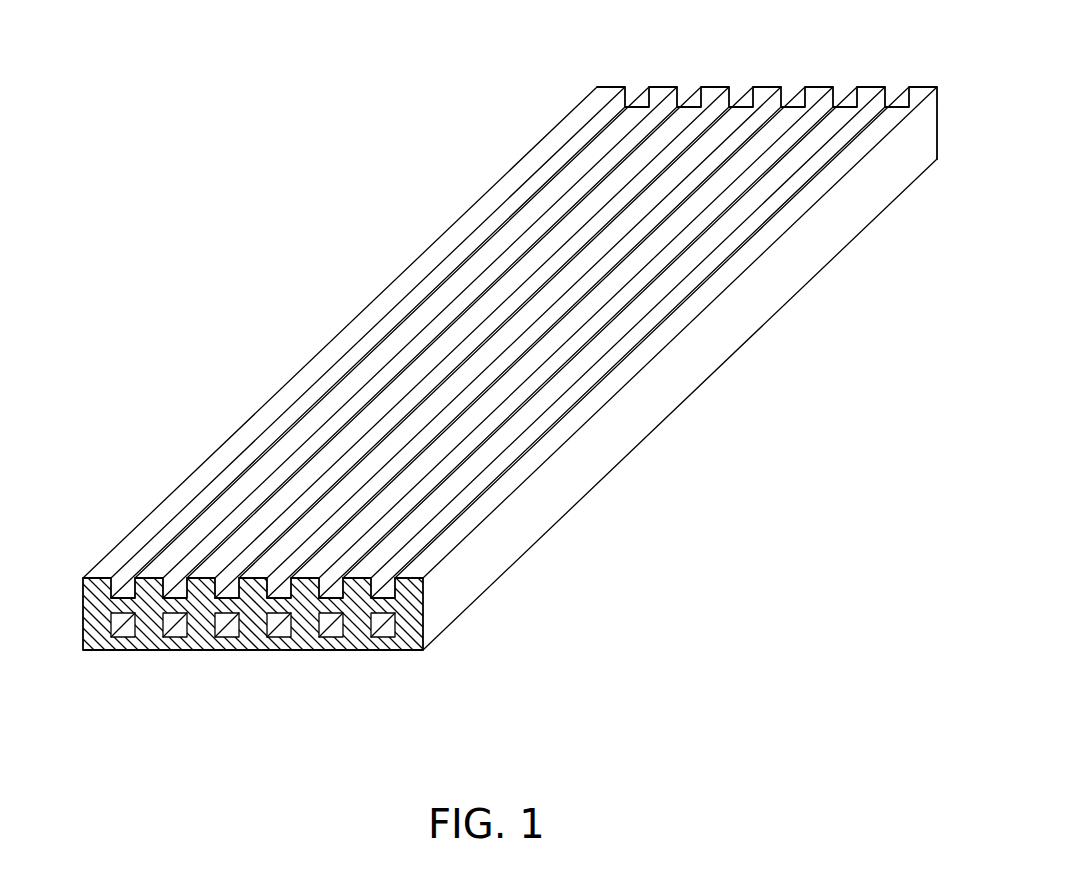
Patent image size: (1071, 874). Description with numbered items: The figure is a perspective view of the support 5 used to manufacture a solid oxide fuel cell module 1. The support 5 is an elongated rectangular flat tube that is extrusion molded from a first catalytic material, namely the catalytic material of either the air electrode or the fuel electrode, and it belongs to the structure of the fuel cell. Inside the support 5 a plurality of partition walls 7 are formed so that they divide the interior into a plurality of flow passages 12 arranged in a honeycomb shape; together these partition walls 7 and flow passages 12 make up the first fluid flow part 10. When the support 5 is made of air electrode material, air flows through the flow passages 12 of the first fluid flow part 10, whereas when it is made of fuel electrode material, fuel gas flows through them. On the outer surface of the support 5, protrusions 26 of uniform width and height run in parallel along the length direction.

The solid oxide fuel cell module 1 is at (474, 403).
The support 5 is at (640, 422).
The partition walls 7 is at (310, 625).
The first fluid flow part 10 is at (474, 403).
The flow passages 12 is at (180, 628).
The protrusions 26 is at (762, 88).